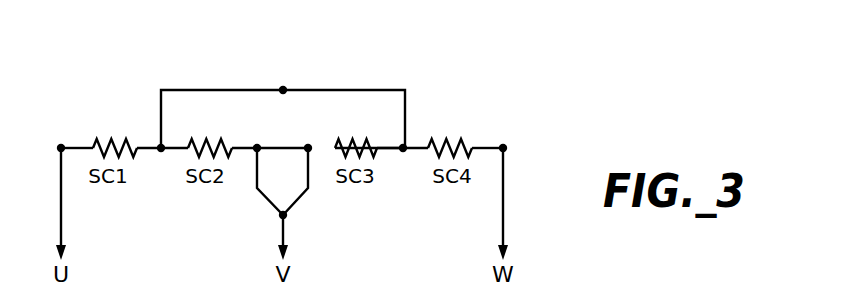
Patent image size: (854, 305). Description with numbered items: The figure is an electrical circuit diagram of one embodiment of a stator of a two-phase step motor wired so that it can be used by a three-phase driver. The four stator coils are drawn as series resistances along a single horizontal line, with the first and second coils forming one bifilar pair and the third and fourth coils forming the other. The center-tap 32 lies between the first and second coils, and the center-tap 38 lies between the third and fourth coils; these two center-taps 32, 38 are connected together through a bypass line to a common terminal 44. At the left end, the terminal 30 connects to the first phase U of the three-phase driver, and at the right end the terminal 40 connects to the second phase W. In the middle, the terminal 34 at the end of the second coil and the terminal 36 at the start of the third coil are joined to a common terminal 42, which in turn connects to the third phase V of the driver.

The terminal 30 is at (62, 146).
The center-tap 32 is at (163, 146).
The terminal 34 is at (258, 145).
The terminal 36 is at (310, 146).
The center-tap 38 is at (405, 146).
The terminal 40 is at (505, 146).
The common terminal 42 is at (286, 216).
The common terminal 44 is at (285, 89).